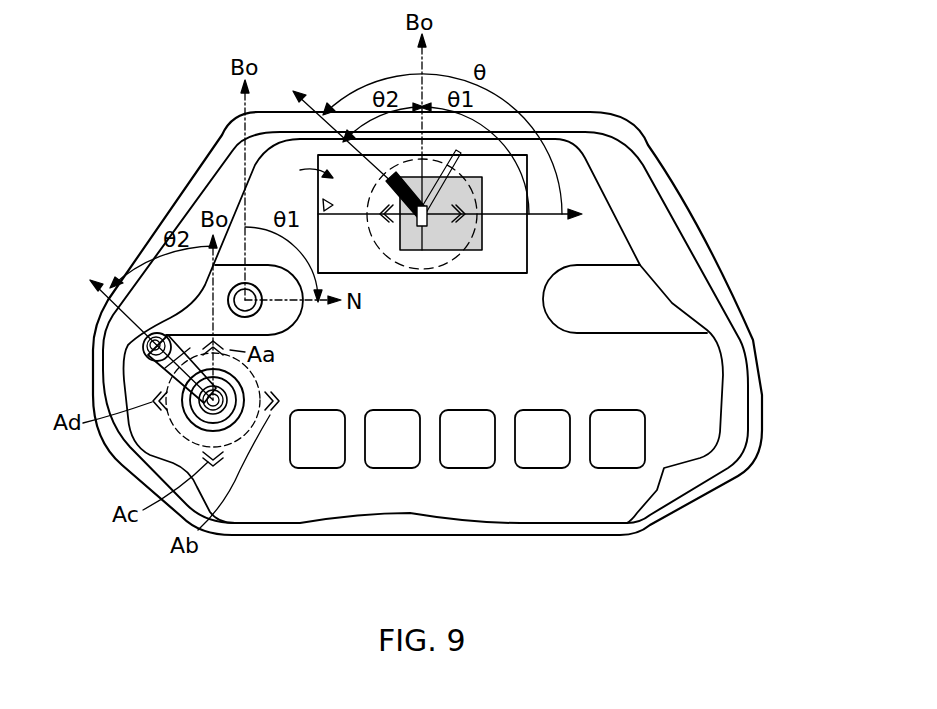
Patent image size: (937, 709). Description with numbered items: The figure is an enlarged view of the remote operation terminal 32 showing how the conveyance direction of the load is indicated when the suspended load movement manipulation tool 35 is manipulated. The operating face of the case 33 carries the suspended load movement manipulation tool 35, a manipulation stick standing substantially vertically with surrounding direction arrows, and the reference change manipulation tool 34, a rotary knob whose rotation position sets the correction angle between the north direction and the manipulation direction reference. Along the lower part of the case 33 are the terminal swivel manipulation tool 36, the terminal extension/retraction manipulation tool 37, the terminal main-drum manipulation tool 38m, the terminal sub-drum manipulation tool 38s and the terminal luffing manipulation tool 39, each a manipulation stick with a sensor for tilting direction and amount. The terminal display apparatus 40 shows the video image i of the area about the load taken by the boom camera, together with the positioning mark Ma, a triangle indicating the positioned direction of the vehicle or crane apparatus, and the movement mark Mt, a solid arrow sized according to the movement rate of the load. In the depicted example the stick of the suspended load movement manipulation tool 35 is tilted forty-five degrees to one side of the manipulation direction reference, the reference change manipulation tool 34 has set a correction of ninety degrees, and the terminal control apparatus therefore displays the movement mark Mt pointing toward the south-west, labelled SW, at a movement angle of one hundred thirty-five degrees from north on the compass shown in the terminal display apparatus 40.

The remote operation terminal 32 is at (403, 281).
The case 33 is at (228, 148).
The reference change manipulation tool 34 is at (260, 308).
The suspended load movement manipulation tool 35 is at (197, 408).
The terminal swivel manipulation tool 36 is at (305, 465).
The terminal extension/retraction manipulation tool 37 is at (378, 465).
The terminal main-drum manipulation tool 38m is at (455, 465).
The terminal sub-drum manipulation tool 38s is at (530, 465).
The terminal luffing manipulation tool 39 is at (601, 465).
The terminal display apparatus 40 is at (507, 263).
The movement mark Mt is at (390, 182).
The positioning mark Ma is at (328, 212).
The switch direction SW is at (334, 126).
The video image i is at (310, 170).